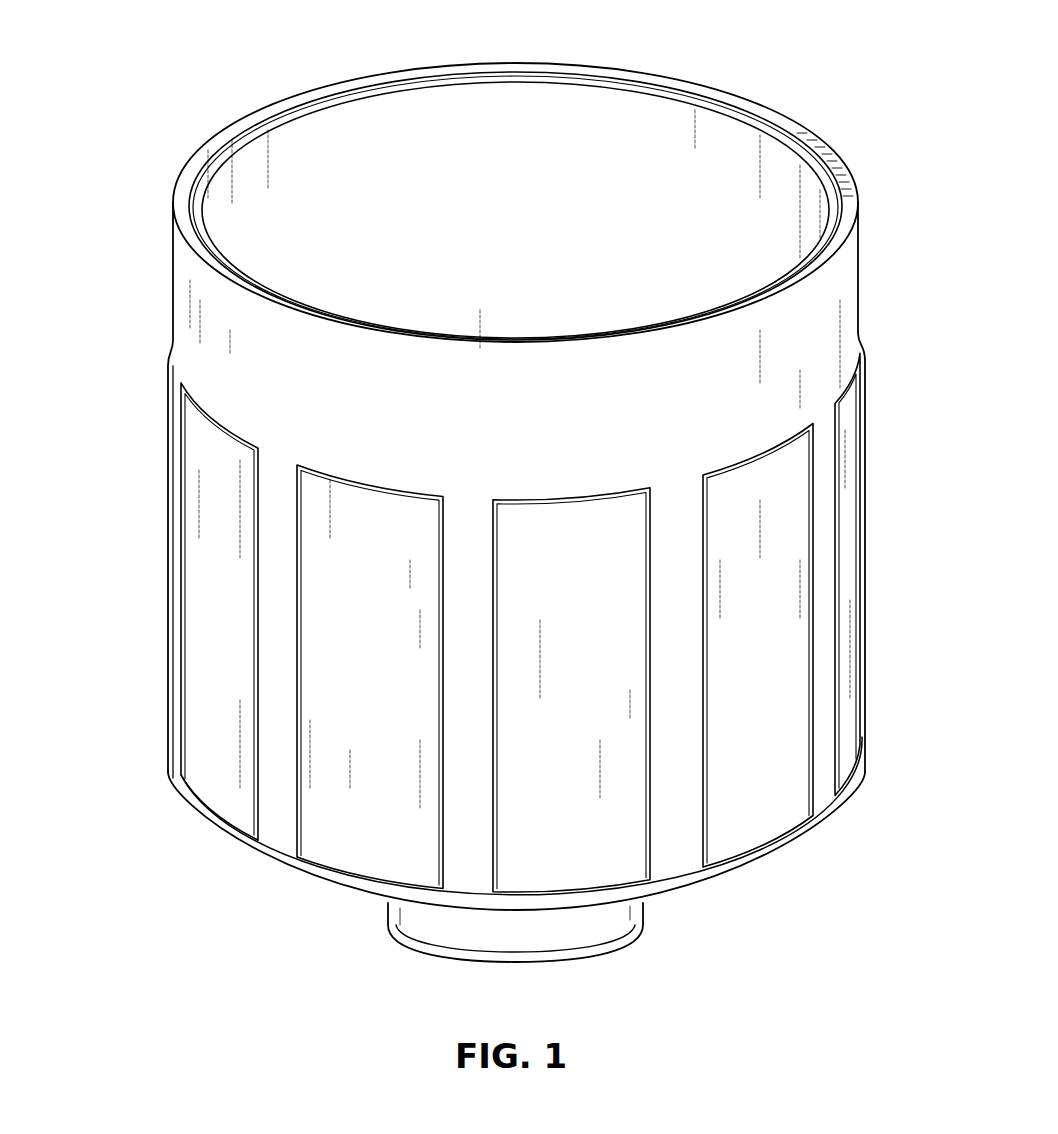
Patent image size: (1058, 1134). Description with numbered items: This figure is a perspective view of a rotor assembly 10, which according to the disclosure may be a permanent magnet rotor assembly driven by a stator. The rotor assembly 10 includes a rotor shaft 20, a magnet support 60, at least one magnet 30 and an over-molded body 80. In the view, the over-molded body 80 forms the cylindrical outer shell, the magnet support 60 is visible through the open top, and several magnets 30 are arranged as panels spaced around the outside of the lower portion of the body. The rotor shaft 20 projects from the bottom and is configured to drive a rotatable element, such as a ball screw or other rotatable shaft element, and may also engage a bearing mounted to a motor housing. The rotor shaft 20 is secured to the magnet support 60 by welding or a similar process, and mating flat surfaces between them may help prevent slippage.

The rotor assembly 10 is at (147, 122).
The rotor shaft 20 is at (440, 930).
The magnet 30 is at (317, 502).
The magnet support 60 is at (587, 118).
The over-molded body 80 is at (680, 85).